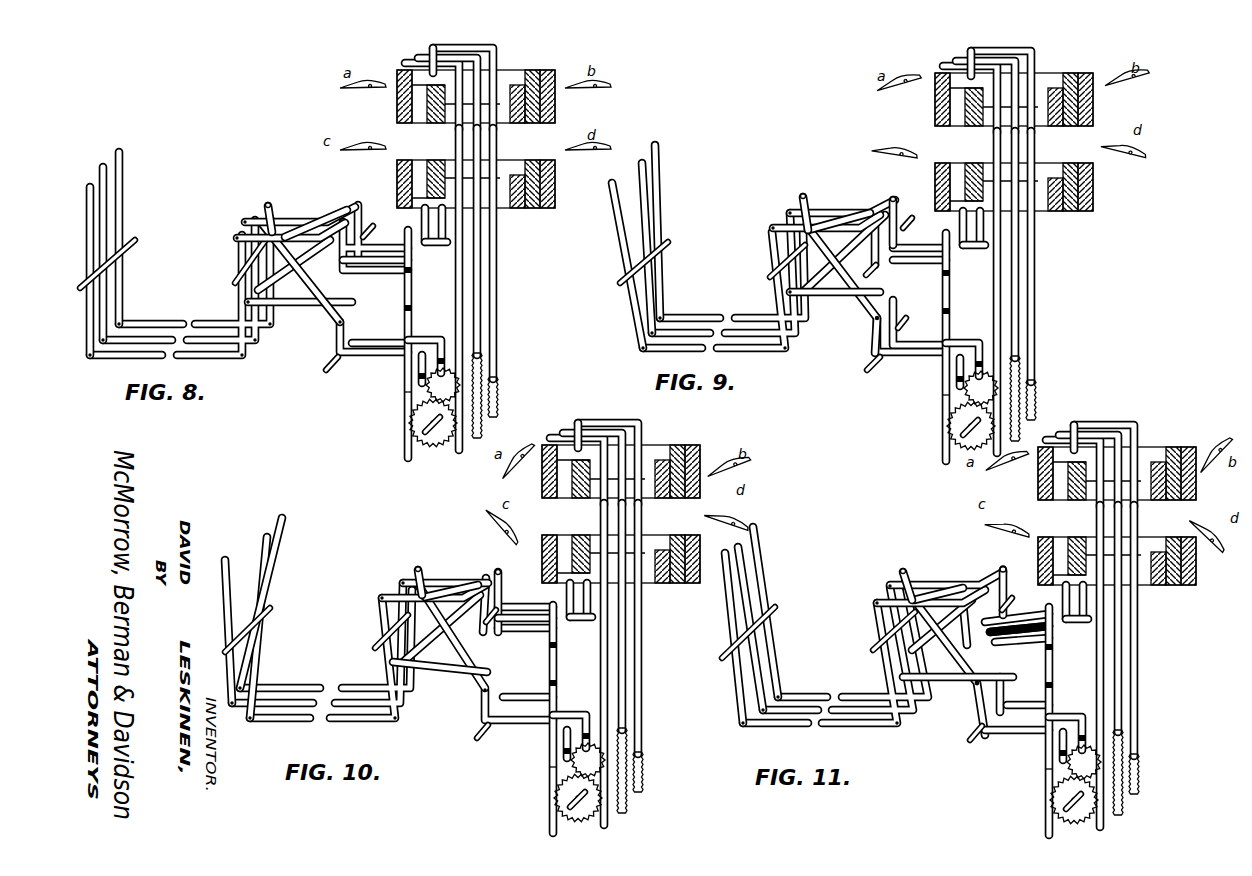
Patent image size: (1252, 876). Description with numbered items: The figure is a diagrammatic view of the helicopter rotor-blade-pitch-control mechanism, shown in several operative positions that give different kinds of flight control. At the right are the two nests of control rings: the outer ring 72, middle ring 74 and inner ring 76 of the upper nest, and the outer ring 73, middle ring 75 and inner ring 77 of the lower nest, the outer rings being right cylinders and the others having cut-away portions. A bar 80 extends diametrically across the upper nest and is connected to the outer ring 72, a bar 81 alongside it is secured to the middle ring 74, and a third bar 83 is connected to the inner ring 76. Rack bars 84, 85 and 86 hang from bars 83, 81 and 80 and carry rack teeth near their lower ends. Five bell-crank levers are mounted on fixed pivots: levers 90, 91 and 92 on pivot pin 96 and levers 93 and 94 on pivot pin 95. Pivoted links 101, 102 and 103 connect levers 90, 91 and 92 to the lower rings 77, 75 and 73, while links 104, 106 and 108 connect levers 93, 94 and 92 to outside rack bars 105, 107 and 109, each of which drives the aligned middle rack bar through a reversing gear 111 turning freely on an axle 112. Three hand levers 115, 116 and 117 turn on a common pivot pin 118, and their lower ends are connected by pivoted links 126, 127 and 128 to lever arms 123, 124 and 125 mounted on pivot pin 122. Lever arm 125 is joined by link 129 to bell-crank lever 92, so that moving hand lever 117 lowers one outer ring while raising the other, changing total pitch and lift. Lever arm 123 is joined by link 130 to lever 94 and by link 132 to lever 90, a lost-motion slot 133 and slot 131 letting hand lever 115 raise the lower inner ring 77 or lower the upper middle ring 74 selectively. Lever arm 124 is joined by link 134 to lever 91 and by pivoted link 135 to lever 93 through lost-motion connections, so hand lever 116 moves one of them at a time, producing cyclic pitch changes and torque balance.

In FIG. 8, the outer ring of the upper nest 72 is at (562, 83).
In FIG. 9, the outer ring of the upper nest 72 is at (1100, 86).
In FIG. 10, the outer ring of the upper nest 72 is at (703, 455).
In FIG. 11, the outer ring of the upper nest 72 is at (1195, 457).
In FIG. 8, the outer ring of the lower nest 73 is at (552, 211).
In FIG. 9, the outer ring of the lower nest 73 is at (1092, 205).
In FIG. 10, the outer ring of the lower nest 73 is at (690, 577).
In FIG. 11, the outer ring of the lower nest 73 is at (1201, 563).
In FIG. 8, the middle ring of the upper nest 74 is at (543, 82).
In FIG. 9, the middle ring of the upper nest 74 is at (1081, 85).
In FIG. 10, the middle ring of the upper nest 74 is at (681, 457).
In FIG. 11, the middle ring of the upper nest 74 is at (1179, 452).
In FIG. 8, the middle ring of the lower nest 75 is at (537, 206).
In FIG. 9, the middle ring of the lower nest 75 is at (1075, 209).
In FIG. 10, the middle ring of the lower nest 75 is at (674, 574).
In FIG. 11, the middle ring of the lower nest 75 is at (1186, 569).
In FIG. 8, the inner ring of the upper nest 76 is at (516, 82).
In FIG. 9, the inner ring of the upper nest 76 is at (1054, 85).
In FIG. 10, the inner ring of the upper nest 76 is at (661, 455).
In FIG. 11, the inner ring of the upper nest 76 is at (1160, 453).
In FIG. 8, the inner ring of the lower nest 77 is at (518, 210).
In FIG. 9, the inner ring of the lower nest 77 is at (1056, 213).
In FIG. 10, the inner ring of the lower nest 77 is at (659, 577).
In FIG. 11, the inner ring of the lower nest 77 is at (1168, 577).
In FIG. 8, the bar 80 is at (414, 91).
In FIG. 9, the bar 80 is at (952, 94).
In FIG. 10, the bar 80 is at (577, 471).
In FIG. 11, the bar 80 is at (1073, 453).
In FIG. 8, the bar 81 is at (416, 84).
In FIG. 9, the bar 81 is at (960, 87).
In FIG. 10, the bar 81 is at (592, 469).
In FIG. 11, the bar 81 is at (1089, 449).
In FIG. 8, the third bar 83 is at (447, 80).
In FIG. 9, the third bar 83 is at (979, 81).
In FIG. 10, the third bar 83 is at (608, 464).
In FIG. 11, the third bar 83 is at (1112, 446).
In FIG. 8, the rack bar 84 is at (464, 253).
In FIG. 9, the rack bar 84 is at (1002, 256).
In FIG. 10, the rack bar 84 is at (609, 628).
In FIG. 11, the rack bar 84 is at (1147, 630).
In FIG. 8, the rack bar 85 is at (456, 241).
In FIG. 9, the rack bar 85 is at (994, 244).
In FIG. 10, the rack bar 85 is at (601, 616).
In FIG. 11, the rack bar 85 is at (1098, 618).
In FIG. 8, the rack bar 86 is at (446, 289).
In FIG. 9, the rack bar 86 is at (984, 292).
In FIG. 10, the rack bar 86 is at (591, 664).
In FIG. 11, the rack bar 86 is at (1089, 666).
In FIG. 9, the bell-crank lever 90 is at (896, 200).
In FIG. 10, the bell-crank lever 90 is at (500, 575).
In FIG. 11, the bell-crank lever 90 is at (1025, 626).
In FIG. 8, the bell-crank lever 91 is at (380, 272).
In FIG. 9, the bell-crank lever 91 is at (919, 230).
In FIG. 10, the bell-crank lever 91 is at (508, 612).
In FIG. 11, the bell-crank lever 91 is at (1028, 632).
In FIG. 9, the bell-crank lever 92 is at (845, 257).
In FIG. 10, the bell-crank lever 92 is at (452, 620).
In FIG. 11, the bell-crank lever 92 is at (985, 630).
In FIG. 8, the bell-crank lever 93 is at (426, 343).
In FIG. 9, the bell-crank lever 93 is at (946, 337).
In FIG. 10, the bell-crank lever 93 is at (552, 710).
In FIG. 11, the bell-crank lever 93 is at (1040, 704).
In FIG. 9, the bell-crank lever 94 is at (910, 348).
In FIG. 10, the bell-crank lever 94 is at (525, 696).
In FIG. 11, the bell-crank lever 94 is at (1010, 733).
In FIG. 8, the pivot pin 95 is at (326, 369).
In FIG. 9, the pivot pin 95 is at (866, 370).
In FIG. 10, the pivot pin 95 is at (478, 738).
In FIG. 11, the pivot pin 95 is at (970, 740).
In FIG. 8, the pivot pin 96 is at (385, 222).
In FIG. 9, the pivot pin 96 is at (872, 274).
In FIG. 10, the pivot pin 96 is at (488, 608).
In FIG. 11, the pivot pin 96 is at (1010, 600).
In FIG. 8, the pivoted links 101 is at (483, 236).
In FIG. 9, the pivoted links 101 is at (1021, 229).
In FIG. 10, the pivoted links 101 is at (547, 600).
In FIG. 11, the pivoted links 101 is at (1117, 602).
In FIG. 8, the pivoted links 102 is at (494, 244).
In FIG. 9, the pivoted links 102 is at (1032, 236).
In FIG. 10, the pivoted links 102 is at (592, 601).
In FIG. 11, the pivoted links 102 is at (1126, 602).
In FIG. 8, the pivoted links 103 is at (484, 269).
In FIG. 9, the pivoted links 103 is at (1022, 260).
In FIG. 10, the pivoted links 103 is at (560, 613).
In FIG. 8, the pivoted links 104 is at (506, 384).
In FIG. 9, the pivoted links 104 is at (1044, 385).
In FIG. 10, the pivoted links 104 is at (594, 740).
In FIG. 11, the pivoted links 104 is at (1100, 749).
In FIG. 8, the outside rack bars 105 is at (514, 384).
In FIG. 9, the outside rack bars 105 is at (1052, 385).
In FIG. 10, the outside rack bars 105 is at (657, 756).
In FIG. 11, the outside rack bars 105 is at (1153, 757).
In FIG. 8, the pivoted links 106 is at (399, 371).
In FIG. 9, the pivoted links 106 is at (941, 372).
In FIG. 10, the pivoted links 106 is at (540, 744).
In FIG. 11, the pivoted links 106 is at (1053, 687).
In FIG. 8, the outside rack bars 107 is at (415, 392).
In FIG. 9, the outside rack bars 107 is at (952, 392).
In FIG. 10, the outside rack bars 107 is at (557, 760).
In FIG. 11, the outside rack bars 107 is at (1058, 762).
In FIG. 8, the pivoted links 108 is at (395, 344).
In FIG. 9, the pivoted links 108 is at (929, 347).
In FIG. 10, the pivoted links 108 is at (553, 719).
In FIG. 11, the pivoted links 108 is at (1049, 721).
In FIG. 8, the outside rack bars 109 is at (391, 397).
In FIG. 9, the outside rack bars 109 is at (927, 392).
In FIG. 10, the outside rack bars 109 is at (533, 757).
In FIG. 11, the outside rack bars 109 is at (1034, 759).
In FIG. 8, the reversing gear 111 is at (411, 423).
In FIG. 9, the reversing gear 111 is at (949, 432).
In FIG. 10, the reversing gear 111 is at (554, 798).
In FIG. 11, the reversing gear 111 is at (1057, 800).
In FIG. 8, the axle 112 is at (428, 450).
In FIG. 9, the axle 112 is at (941, 425).
In FIG. 10, the axle 112 is at (548, 804).
In FIG. 11, the axle 112 is at (1048, 791).
In FIG. 8, the hand-controlled lever 115 is at (121, 150).
In FIG. 9, the hand-controlled lever 115 is at (658, 148).
In FIG. 10, the hand-controlled lever 115 is at (282, 520).
In FIG. 11, the hand-controlled lever 115 is at (760, 560).
In FIG. 8, the hand-controlled lever 116 is at (105, 165).
In FIG. 9, the hand-controlled lever 116 is at (643, 162).
In FIG. 10, the hand-controlled lever 116 is at (268, 540).
In FIG. 11, the hand-controlled lever 116 is at (740, 546).
In FIG. 8, the hand-controlled lever 117 is at (90, 185).
In FIG. 9, the hand-controlled lever 117 is at (611, 182).
In FIG. 10, the hand-controlled lever 117 is at (232, 556).
In FIG. 11, the hand-controlled lever 117 is at (732, 598).
In FIG. 8, the pivot pin 118 is at (128, 250).
In FIG. 9, the pivot pin 118 is at (620, 283).
In FIG. 10, the pivot pin 118 is at (228, 652).
In FIG. 11, the pivot pin 118 is at (724, 657).
In FIG. 8, the pivot pin 122 is at (232, 282).
In FIG. 9, the pivot pin 122 is at (770, 278).
In FIG. 10, the pivot pin 122 is at (375, 648).
In FIG. 11, the pivot pin 122 is at (873, 650).
In FIG. 8, the lever arm 123 is at (265, 205).
In FIG. 9, the lever arm 123 is at (800, 198).
In FIG. 10, the lever arm 123 is at (415, 568).
In FIG. 11, the lever arm 123 is at (900, 571).
In FIG. 8, the lever arm 124 is at (245, 222).
In FIG. 9, the lever arm 124 is at (790, 215).
In FIG. 10, the lever arm 124 is at (403, 584).
In FIG. 11, the lever arm 124 is at (890, 586).
In FIG. 8, the lever arm 125 is at (237, 239).
In FIG. 9, the lever arm 125 is at (773, 231).
In FIG. 10, the lever arm 125 is at (382, 599).
In FIG. 11, the lever arm 125 is at (877, 604).
In FIG. 8, the pivoted link 126 is at (150, 322).
In FIG. 9, the pivoted link 126 is at (690, 316).
In FIG. 10, the pivoted link 126 is at (280, 676).
In FIG. 11, the pivoted link 126 is at (826, 695).
In FIG. 8, the pivoted link 127 is at (160, 338).
In FIG. 9, the pivoted link 127 is at (705, 331).
In FIG. 10, the pivoted link 127 is at (292, 701).
In FIG. 11, the pivoted link 127 is at (812, 712).
In FIG. 8, the pivoted link 128 is at (175, 340).
In FIG. 9, the pivoted link 128 is at (720, 346).
In FIG. 10, the pivoted link 128 is at (300, 716).
In FIG. 11, the pivoted link 128 is at (790, 724).
In FIG. 8, the pivoted link 129 is at (300, 228).
In FIG. 9, the pivoted link 129 is at (840, 222).
In FIG. 10, the pivoted link 129 is at (445, 590).
In FIG. 11, the pivoted link 129 is at (950, 595).
In FIG. 8, the link 130 is at (301, 273).
In FIG. 9, the link 130 is at (852, 280).
In FIG. 10, the link 130 is at (478, 692).
In FIG. 11, the link 130 is at (952, 652).
In FIG. 9, the slot 131 is at (875, 322).
In FIG. 11, the slot 131 is at (975, 686).
In FIG. 11, the link 132 is at (1000, 568).
In FIG. 11, the longitudinally-extending slot 133 is at (1004, 566).
In FIG. 8, the link 134 is at (275, 215).
In FIG. 9, the link 134 is at (808, 212).
In FIG. 10, the link 134 is at (422, 575).
In FIG. 11, the link 134 is at (940, 588).
In FIG. 9, the pivoted link 135 is at (828, 296).
In FIG. 10, the pivoted link 135 is at (430, 668).
In FIG. 11, the pivoted link 135 is at (992, 676).